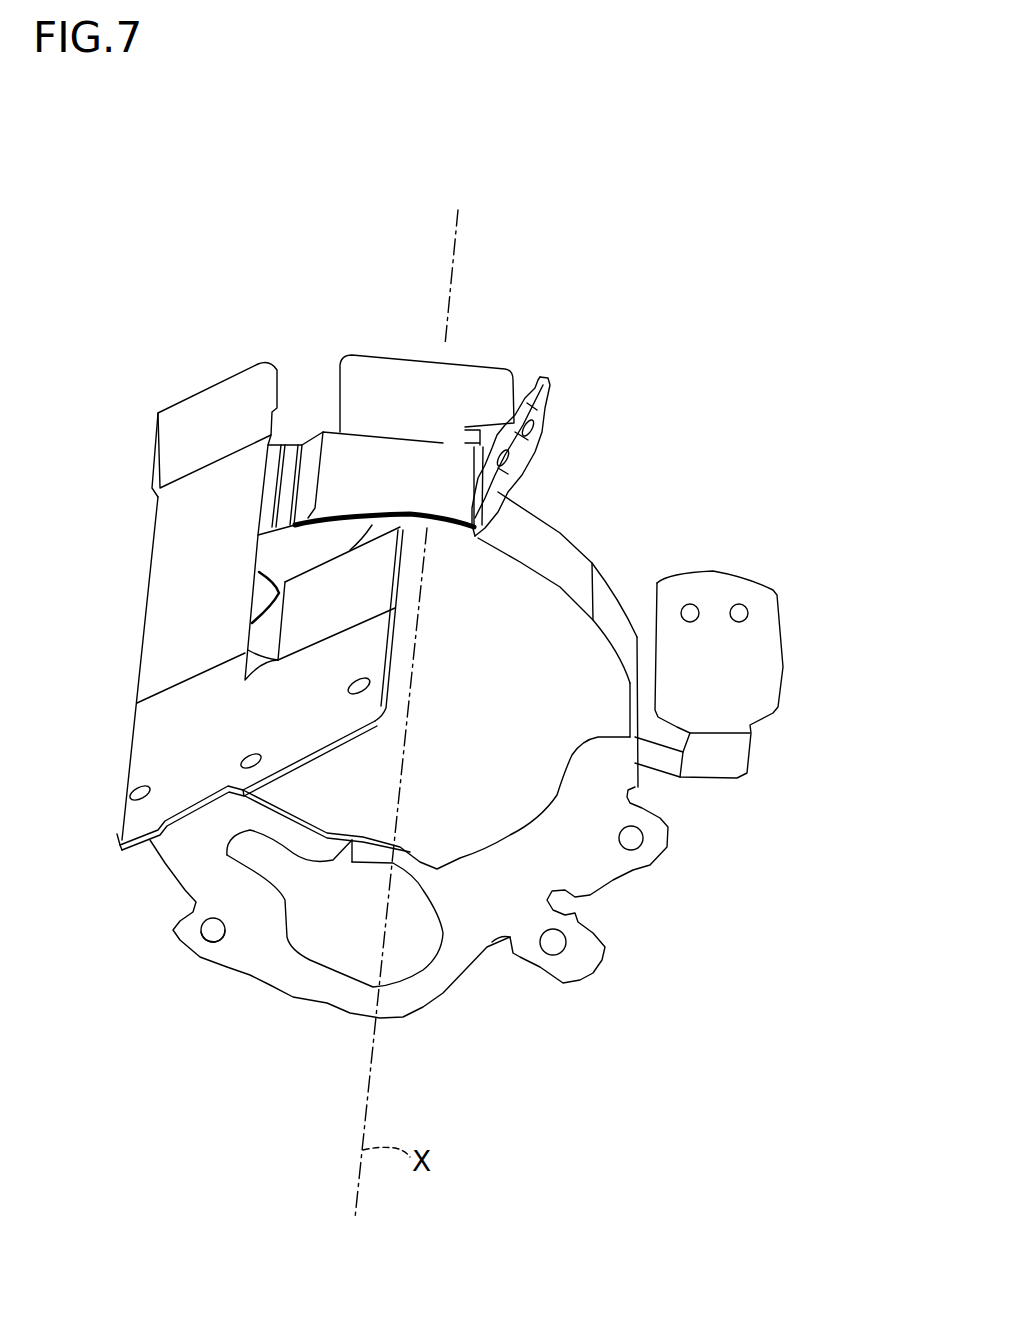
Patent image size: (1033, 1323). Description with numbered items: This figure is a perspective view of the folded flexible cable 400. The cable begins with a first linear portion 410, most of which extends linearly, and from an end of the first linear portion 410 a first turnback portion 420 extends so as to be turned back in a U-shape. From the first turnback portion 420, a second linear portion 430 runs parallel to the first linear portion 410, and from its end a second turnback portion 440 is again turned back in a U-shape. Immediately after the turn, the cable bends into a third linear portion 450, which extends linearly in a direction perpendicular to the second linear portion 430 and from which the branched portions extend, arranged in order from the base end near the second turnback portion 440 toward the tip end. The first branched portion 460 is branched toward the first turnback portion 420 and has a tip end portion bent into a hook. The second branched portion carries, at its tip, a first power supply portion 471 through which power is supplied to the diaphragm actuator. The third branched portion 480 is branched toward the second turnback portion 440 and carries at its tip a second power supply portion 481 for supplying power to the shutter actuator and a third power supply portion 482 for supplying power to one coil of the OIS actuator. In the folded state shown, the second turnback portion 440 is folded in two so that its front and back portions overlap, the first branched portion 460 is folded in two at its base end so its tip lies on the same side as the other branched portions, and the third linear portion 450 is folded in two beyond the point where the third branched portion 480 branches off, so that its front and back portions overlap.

The flexible cable 400 is at (652, 140).
The first linear portion 410 is at (332, 598).
The first turnback portion 420 is at (160, 717).
The second linear portion 430 is at (207, 530).
The second turnback portion 440 is at (208, 415).
The third linear portion 450 is at (347, 455).
The first branched portion 460 is at (390, 383).
The first power supply portion 471 is at (535, 387).
The third branched portion 480 is at (578, 573).
The second power supply portion 481 is at (752, 663).
The third power supply portion 482 is at (243, 947).